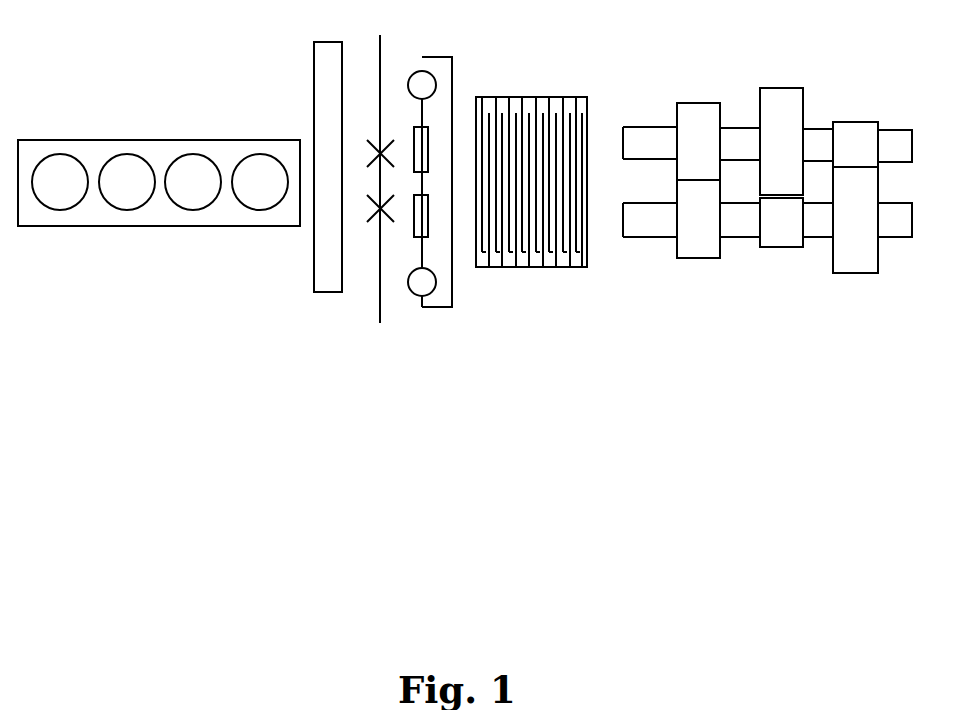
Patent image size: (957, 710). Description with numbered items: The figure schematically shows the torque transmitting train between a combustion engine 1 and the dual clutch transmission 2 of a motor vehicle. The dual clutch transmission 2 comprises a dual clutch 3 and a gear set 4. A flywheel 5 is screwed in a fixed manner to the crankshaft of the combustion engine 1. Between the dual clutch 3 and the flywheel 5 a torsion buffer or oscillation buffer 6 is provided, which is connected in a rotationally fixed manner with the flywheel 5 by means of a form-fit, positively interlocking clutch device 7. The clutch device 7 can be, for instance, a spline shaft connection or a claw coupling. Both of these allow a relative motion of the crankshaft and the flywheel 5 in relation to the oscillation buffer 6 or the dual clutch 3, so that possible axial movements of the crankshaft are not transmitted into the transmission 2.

The combustion engine 1 is at (168, 262).
The dual clutch transmission 2 is at (749, 212).
The dual clutch 3 is at (540, 95).
The gear set 4 is at (735, 115).
The flywheel 5 is at (335, 293).
The oscillation buffer 6 is at (437, 307).
The clutch device 7 is at (380, 315).